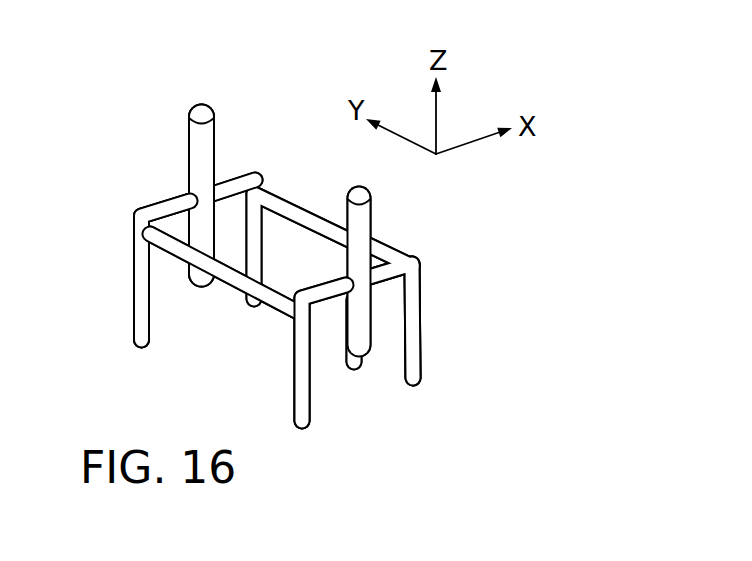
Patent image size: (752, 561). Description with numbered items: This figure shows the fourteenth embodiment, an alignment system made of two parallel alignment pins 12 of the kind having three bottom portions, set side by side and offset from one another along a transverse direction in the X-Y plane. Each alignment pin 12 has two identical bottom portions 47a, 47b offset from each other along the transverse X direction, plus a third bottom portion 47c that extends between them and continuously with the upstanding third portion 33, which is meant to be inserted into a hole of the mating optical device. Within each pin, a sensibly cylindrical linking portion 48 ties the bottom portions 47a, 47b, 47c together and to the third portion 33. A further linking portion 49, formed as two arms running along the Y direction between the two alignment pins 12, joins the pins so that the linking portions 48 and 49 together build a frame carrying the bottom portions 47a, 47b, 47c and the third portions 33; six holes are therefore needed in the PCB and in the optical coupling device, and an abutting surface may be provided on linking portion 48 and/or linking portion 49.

The alignment pin 12 is at (164, 134).
The third portion 33 is at (203, 127).
The bottom portion 47a is at (140, 323).
The bottom portion 47b is at (255, 249).
The third bottom portion 47c is at (197, 231).
The linking portion 48 is at (230, 185).
The linking portion 49 is at (221, 278).